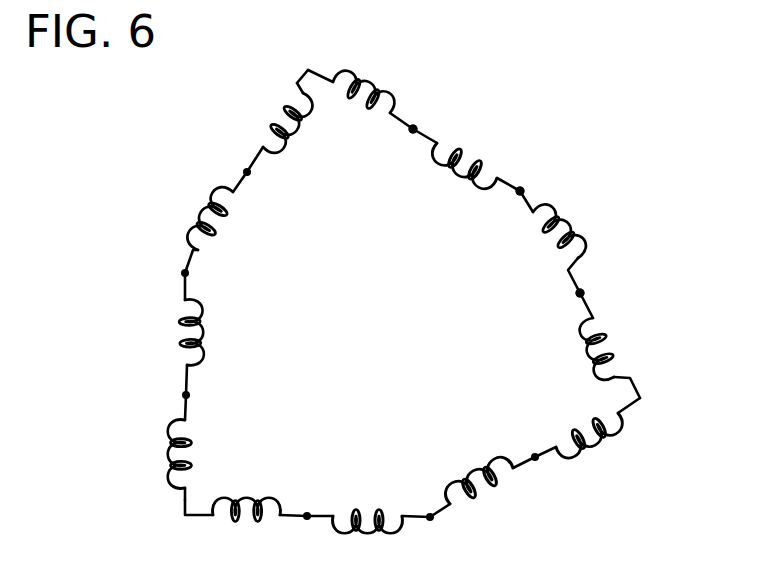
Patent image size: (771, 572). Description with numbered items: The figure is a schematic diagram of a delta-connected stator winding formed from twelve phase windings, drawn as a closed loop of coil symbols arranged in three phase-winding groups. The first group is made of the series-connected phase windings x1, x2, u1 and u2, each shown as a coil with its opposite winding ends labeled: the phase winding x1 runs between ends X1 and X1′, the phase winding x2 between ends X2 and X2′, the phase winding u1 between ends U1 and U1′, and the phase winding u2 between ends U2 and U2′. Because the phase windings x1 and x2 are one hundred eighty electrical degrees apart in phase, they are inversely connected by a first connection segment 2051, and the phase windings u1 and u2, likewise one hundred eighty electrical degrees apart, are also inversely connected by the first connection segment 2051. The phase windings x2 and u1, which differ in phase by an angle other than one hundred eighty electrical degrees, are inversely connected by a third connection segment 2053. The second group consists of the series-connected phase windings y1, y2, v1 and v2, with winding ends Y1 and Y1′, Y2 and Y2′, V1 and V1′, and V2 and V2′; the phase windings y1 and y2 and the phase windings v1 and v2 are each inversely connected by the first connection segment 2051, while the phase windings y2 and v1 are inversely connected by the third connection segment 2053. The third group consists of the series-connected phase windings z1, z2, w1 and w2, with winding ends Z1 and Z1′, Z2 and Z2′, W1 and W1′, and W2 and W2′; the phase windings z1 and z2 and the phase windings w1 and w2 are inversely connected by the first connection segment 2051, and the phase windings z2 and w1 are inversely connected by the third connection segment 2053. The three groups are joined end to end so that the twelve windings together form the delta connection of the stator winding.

The first connection segment 2051 is at (413, 129).
The third connection segment 2053 is at (520, 191).
The phase winding x1 is at (368, 92).
The phase winding x2 is at (464, 169).
The phase winding u1 is at (549, 232).
The phase winding u2 is at (584, 349).
The phase winding y1 is at (589, 427).
The phase winding y2 is at (479, 475).
The phase winding v1 is at (368, 506).
The phase winding v2 is at (247, 492).
The phase winding z1 is at (197, 454).
The phase winding z2 is at (207, 332).
The phase winding w1 is at (217, 221).
The phase winding w2 is at (291, 121).
The winding end X1 is at (394, 133).
The winding end X1′ is at (334, 57).
The winding end X2 is at (514, 174).
The winding end X2′ is at (442, 128).
The winding end U1 is at (559, 279).
The winding end U1′ is at (551, 197).
The winding end U2 is at (648, 381).
The winding end U2′ is at (607, 300).
The winding end Y1 is at (535, 442).
The winding end Y1′ is at (641, 420).
The winding end Y2 is at (451, 523).
The winding end Y2′ is at (533, 478).
The winding end V1 is at (318, 500).
The winding end V1′ is at (414, 536).
The winding end V2 is at (194, 525).
The winding end V2′ is at (288, 532).
The winding end Z1 is at (163, 407).
The winding end Z1′ is at (159, 497).
The winding end Z2 is at (162, 290).
The winding end Z2′ is at (207, 382).
The winding end W1 is at (259, 190).
The winding end W1′ is at (164, 256).
The winding end W2 is at (278, 70).
The winding end W2′ is at (227, 157).